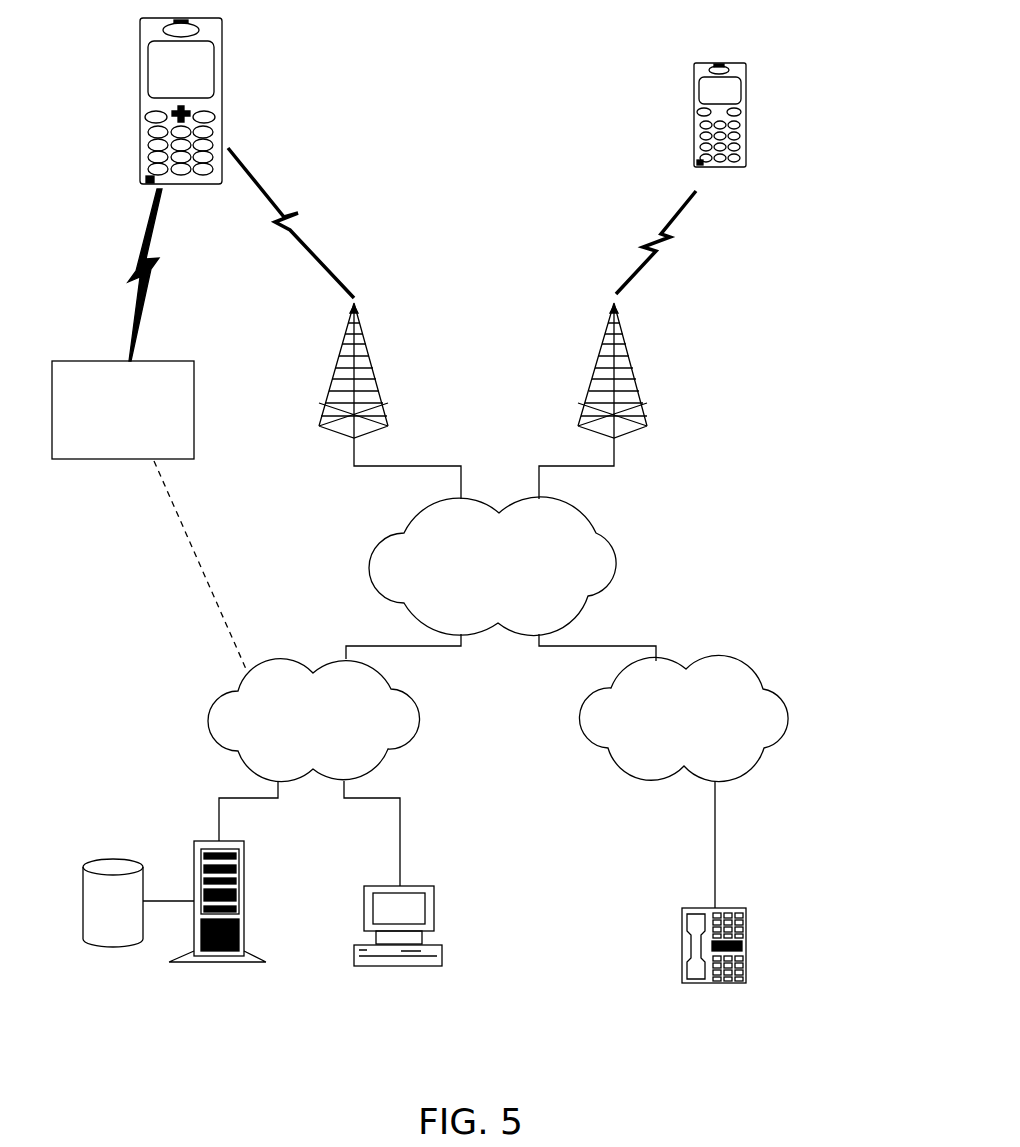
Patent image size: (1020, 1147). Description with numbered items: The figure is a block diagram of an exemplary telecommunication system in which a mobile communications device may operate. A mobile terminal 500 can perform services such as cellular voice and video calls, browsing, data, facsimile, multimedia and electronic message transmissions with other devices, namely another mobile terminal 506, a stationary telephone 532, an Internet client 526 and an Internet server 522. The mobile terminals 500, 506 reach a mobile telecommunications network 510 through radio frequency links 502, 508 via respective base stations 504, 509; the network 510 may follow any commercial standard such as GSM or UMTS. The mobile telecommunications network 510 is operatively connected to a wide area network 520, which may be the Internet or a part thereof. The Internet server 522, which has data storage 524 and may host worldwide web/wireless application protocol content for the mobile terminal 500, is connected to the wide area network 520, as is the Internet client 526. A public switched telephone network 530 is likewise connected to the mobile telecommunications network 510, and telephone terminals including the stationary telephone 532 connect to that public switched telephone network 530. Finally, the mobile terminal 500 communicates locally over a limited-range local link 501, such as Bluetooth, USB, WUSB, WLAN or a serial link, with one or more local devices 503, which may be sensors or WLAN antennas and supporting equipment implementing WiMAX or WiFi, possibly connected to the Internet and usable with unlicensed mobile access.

The mobile terminal 500 is at (137, 116).
The local link 501 is at (123, 273).
The radio frequency link 502 is at (290, 204).
The local devices 503 is at (87, 460).
The base station 504 is at (355, 370).
The mobile terminal 506 is at (710, 62).
The radio frequency link 508 is at (638, 235).
The base station 509 is at (602, 345).
The mobile telecommunications network 510 is at (363, 558).
The wide area network 520 is at (212, 693).
The Internet server 522 is at (195, 878).
The data storage 524 is at (107, 860).
The Internet client 526 is at (418, 884).
The public switched telephone network 530 is at (795, 715).
The stationary telephone 532 is at (683, 925).